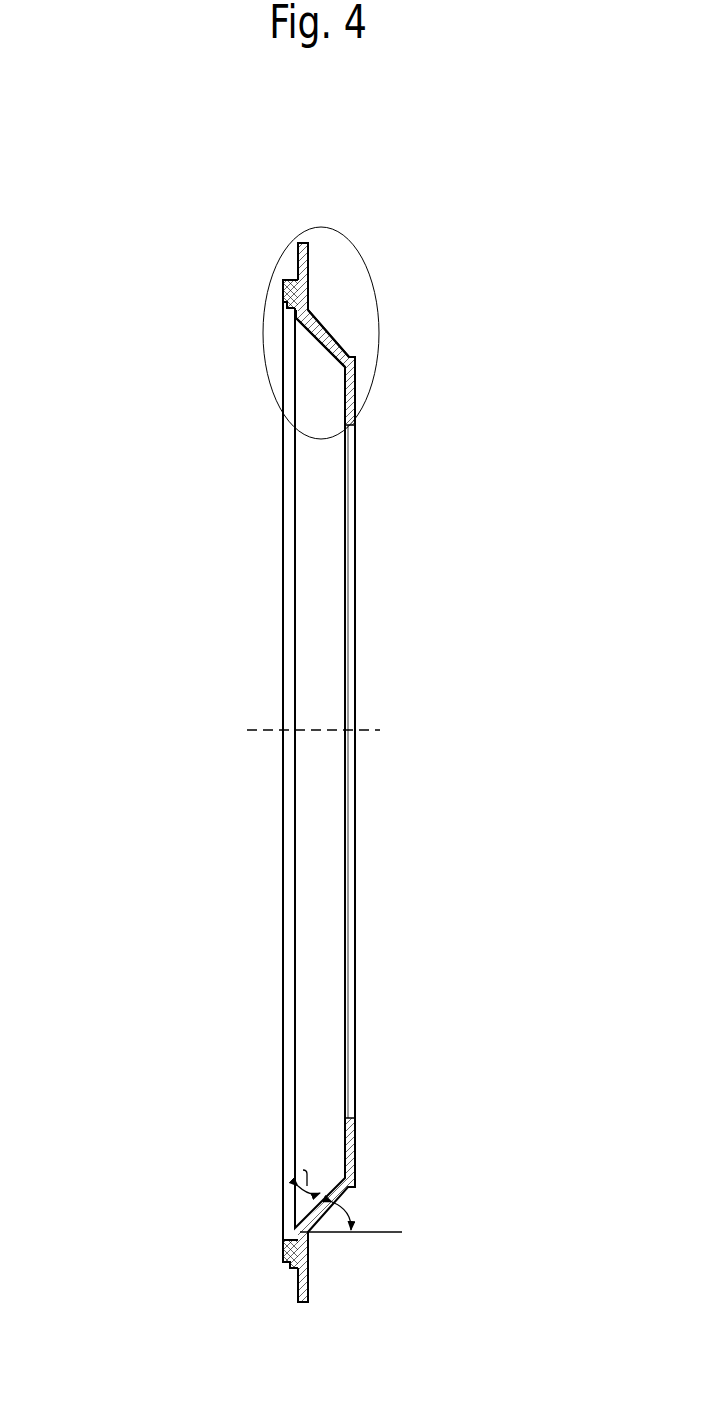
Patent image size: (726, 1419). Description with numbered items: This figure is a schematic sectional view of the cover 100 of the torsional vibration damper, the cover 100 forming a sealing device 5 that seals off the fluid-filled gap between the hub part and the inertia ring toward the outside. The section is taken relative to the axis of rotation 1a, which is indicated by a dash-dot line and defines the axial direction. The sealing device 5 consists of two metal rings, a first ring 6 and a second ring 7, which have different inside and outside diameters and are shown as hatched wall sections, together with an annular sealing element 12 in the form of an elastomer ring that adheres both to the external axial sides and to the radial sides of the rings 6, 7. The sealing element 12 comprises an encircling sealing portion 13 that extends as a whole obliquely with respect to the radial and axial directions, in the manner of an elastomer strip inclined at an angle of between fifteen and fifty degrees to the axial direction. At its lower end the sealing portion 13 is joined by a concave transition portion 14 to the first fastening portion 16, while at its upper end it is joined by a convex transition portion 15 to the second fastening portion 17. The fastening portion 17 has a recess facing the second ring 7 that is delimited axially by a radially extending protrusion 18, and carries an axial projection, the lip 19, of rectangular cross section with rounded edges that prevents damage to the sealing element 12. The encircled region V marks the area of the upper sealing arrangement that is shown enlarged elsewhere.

The sealing device 5 is at (183, 616).
The cover 100 is at (183, 1064).
The second ring 7 is at (303, 243).
The first ring 6 is at (355, 385).
The sealing element 12 is at (337, 343).
The sealing portion 13 is at (320, 341).
The transition portion 14 is at (343, 368).
The transition portion 15 is at (295, 313).
The first fastening portion 16 is at (343, 409).
The second fastening portion 17 is at (282, 295).
The protrusion 18 is at (281, 280).
The lip 19 is at (281, 288).
The axis of rotation 1a is at (382, 730).
The region V is at (369, 272).